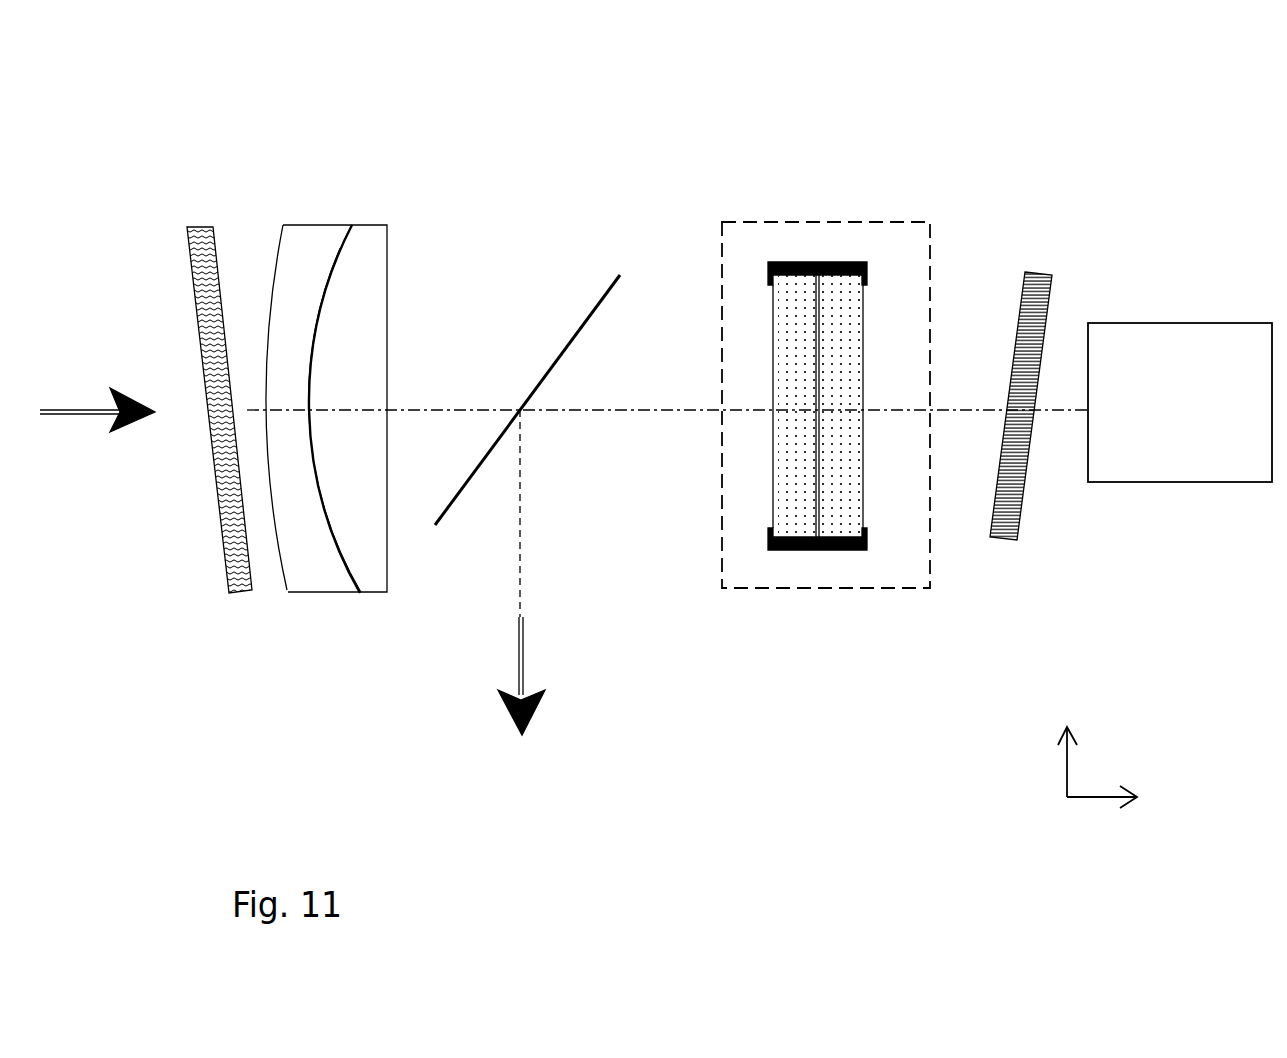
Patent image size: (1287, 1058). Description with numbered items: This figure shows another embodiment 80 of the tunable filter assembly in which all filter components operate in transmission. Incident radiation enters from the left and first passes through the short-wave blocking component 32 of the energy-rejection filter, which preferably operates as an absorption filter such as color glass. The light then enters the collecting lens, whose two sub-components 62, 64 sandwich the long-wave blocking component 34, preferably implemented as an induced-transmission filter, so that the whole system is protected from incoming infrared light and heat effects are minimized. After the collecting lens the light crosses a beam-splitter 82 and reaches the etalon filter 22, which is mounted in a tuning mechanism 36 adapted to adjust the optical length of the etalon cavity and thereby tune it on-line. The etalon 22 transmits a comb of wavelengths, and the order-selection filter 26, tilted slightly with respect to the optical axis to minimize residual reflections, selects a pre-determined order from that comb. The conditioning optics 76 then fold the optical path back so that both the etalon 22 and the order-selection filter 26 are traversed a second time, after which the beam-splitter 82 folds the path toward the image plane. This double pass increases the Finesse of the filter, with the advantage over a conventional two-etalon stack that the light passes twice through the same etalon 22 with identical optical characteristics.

The embodiment 80 is at (656, 420).
The short-wave blocking component 32 is at (187, 247).
The long-wave blocking component 34 is at (329, 404).
The sub-component of collecting lens 62 is at (310, 573).
The sub-component of collecting lens 64 is at (370, 580).
The beam-splitter 82 is at (610, 287).
The tuning mechanism 36 is at (818, 590).
The etalon filter 22 is at (800, 503).
The order-selection filter 26 is at (1027, 270).
The conditioning optics 76 is at (1212, 462).